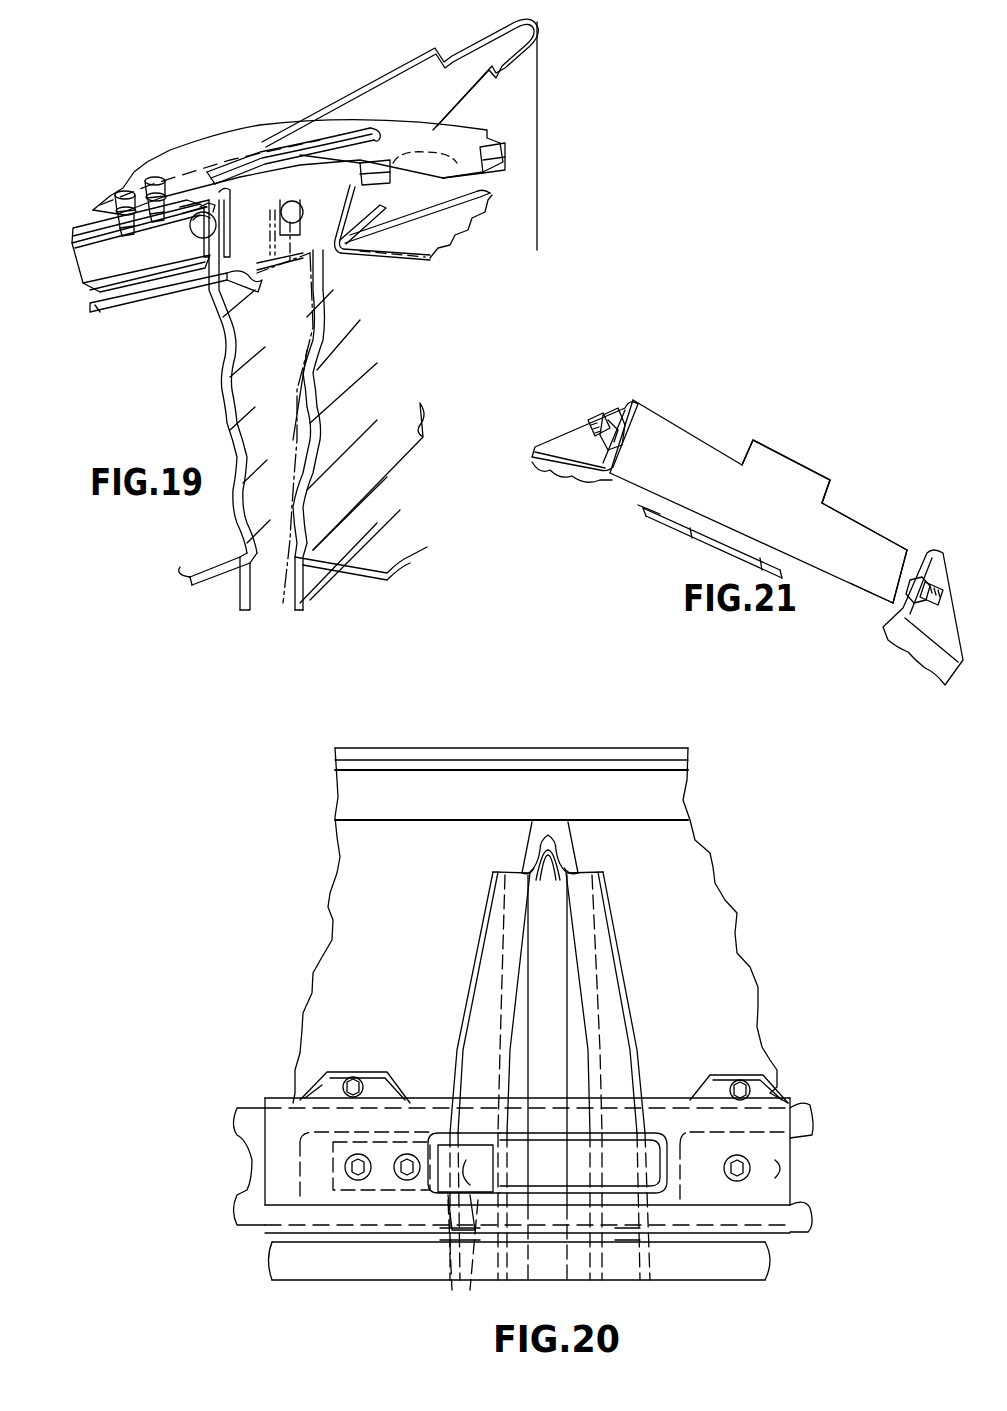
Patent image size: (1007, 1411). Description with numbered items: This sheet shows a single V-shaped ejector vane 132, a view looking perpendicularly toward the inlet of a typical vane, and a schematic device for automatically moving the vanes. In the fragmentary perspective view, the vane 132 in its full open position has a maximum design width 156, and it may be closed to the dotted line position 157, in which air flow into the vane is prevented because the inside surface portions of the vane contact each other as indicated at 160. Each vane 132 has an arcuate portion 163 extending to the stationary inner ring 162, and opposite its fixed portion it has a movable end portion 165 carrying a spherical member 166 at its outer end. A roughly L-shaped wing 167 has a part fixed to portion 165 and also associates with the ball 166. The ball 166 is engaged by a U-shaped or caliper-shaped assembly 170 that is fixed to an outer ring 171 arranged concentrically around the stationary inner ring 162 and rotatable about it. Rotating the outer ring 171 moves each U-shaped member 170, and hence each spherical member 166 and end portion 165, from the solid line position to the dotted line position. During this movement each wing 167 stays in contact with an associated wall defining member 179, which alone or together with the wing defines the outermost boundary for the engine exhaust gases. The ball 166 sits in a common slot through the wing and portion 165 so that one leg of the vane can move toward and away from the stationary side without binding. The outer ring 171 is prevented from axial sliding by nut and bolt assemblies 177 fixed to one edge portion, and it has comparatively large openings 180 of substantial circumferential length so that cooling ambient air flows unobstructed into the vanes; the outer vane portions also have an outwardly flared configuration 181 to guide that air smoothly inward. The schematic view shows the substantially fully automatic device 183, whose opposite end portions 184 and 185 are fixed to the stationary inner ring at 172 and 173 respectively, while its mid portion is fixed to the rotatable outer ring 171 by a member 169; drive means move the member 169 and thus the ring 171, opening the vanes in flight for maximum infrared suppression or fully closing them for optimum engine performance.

In FIG. 19, the ejector vane 132 is at (537, 210).
In FIG. 20, the ejector vane 132 is at (560, 855).
In FIG. 19, the maximum design width 156 is at (345, 188).
In FIG. 19, the dotted line closed position 157 is at (262, 322).
In FIG. 19, the contact of inside surface portions 160 is at (345, 262).
In FIG. 19, the stationary inner ring 162 is at (470, 148).
In FIG. 20, the stationary inner ring 162 is at (800, 1120).
In FIG. 19, the arcuate portion 163 is at (335, 242).
In FIG. 19, the movable end portion 165 is at (216, 245).
In FIG. 19, the spherical member 166 is at (194, 233).
In FIG. 20, the spherical member 166 is at (450, 1290).
In FIG. 19, the wing 167 is at (115, 275).
In FIG. 21, the member 169 is at (728, 540).
In FIG. 19, the U-shaped assembly 170 is at (210, 170).
In FIG. 20, the U-shaped assembly 170 is at (467, 1145).
In FIG. 19, the outer ring 171 is at (188, 142).
In FIG. 21, the outer ring 171 is at (665, 520).
In FIG. 20, the outer ring 171 is at (322, 1088).
In FIG. 21, the end fixing location 172 is at (575, 432).
In FIG. 21, the end fixing location 173 is at (963, 672).
In FIG. 20, the nut and bolt assemblies 177 is at (763, 1093).
In FIG. 19, the wall defining member 179 is at (125, 338).
In FIG. 20, the wall defining member 179 is at (342, 940).
In FIG. 20, the opening 180 is at (655, 1122).
In FIG. 20, the outwardly flared configuration 181 is at (485, 972).
In FIG. 21, the automatic device 183 is at (840, 478).
In FIG. 21, the end portion 184 is at (668, 432).
In FIG. 21, the end portion 185 is at (880, 545).